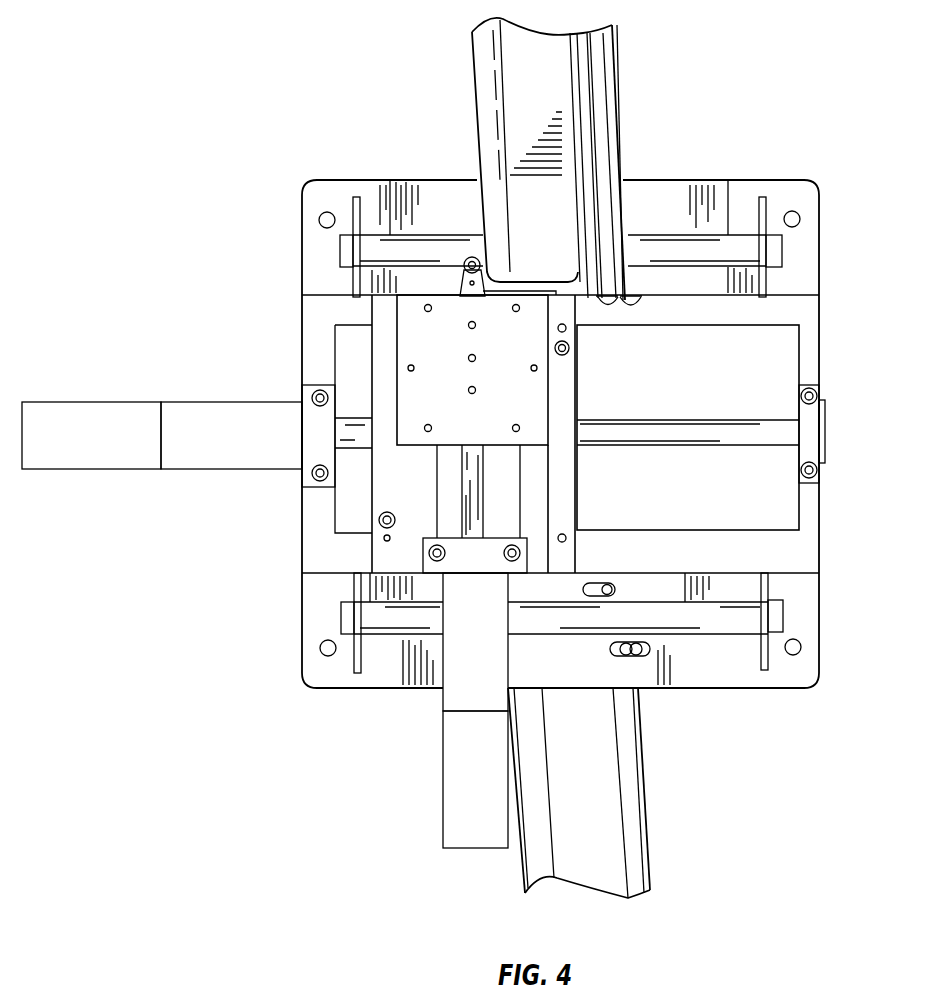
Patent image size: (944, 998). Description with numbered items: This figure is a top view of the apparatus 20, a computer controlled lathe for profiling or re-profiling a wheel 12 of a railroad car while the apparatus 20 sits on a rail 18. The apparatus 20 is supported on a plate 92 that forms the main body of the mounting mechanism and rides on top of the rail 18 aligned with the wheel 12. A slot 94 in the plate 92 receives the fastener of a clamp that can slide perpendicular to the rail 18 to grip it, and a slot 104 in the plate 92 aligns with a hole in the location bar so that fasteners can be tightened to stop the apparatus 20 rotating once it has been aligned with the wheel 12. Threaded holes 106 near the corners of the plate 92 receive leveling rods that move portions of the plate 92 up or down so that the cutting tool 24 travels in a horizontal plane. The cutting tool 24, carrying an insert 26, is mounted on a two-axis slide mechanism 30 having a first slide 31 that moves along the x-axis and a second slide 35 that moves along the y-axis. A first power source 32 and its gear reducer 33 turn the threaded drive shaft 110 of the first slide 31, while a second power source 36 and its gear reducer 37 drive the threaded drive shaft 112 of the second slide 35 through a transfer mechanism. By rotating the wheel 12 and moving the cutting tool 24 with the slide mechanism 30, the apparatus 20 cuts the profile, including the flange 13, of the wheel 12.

The wheel 12 is at (482, 106).
The flange 13 is at (628, 300).
The rail 18 is at (635, 839).
The apparatus 20 is at (693, 68).
The cutting tool 24 is at (462, 276).
The insert 26 is at (467, 258).
The slide mechanism 30 is at (277, 650).
The first slide 31 is at (385, 487).
The first power source 32 is at (210, 415).
The gear reducer 33 is at (112, 418).
The second slide 35 is at (383, 352).
The second power source 36 is at (450, 697).
The gear reducer 37 is at (450, 788).
The plate 92 is at (777, 680).
The slot 94 is at (645, 657).
The slot 104 is at (613, 592).
The threaded hole 106 is at (320, 218).
The threaded drive shaft 110 is at (776, 428).
The threaded drive shaft 112 is at (470, 500).